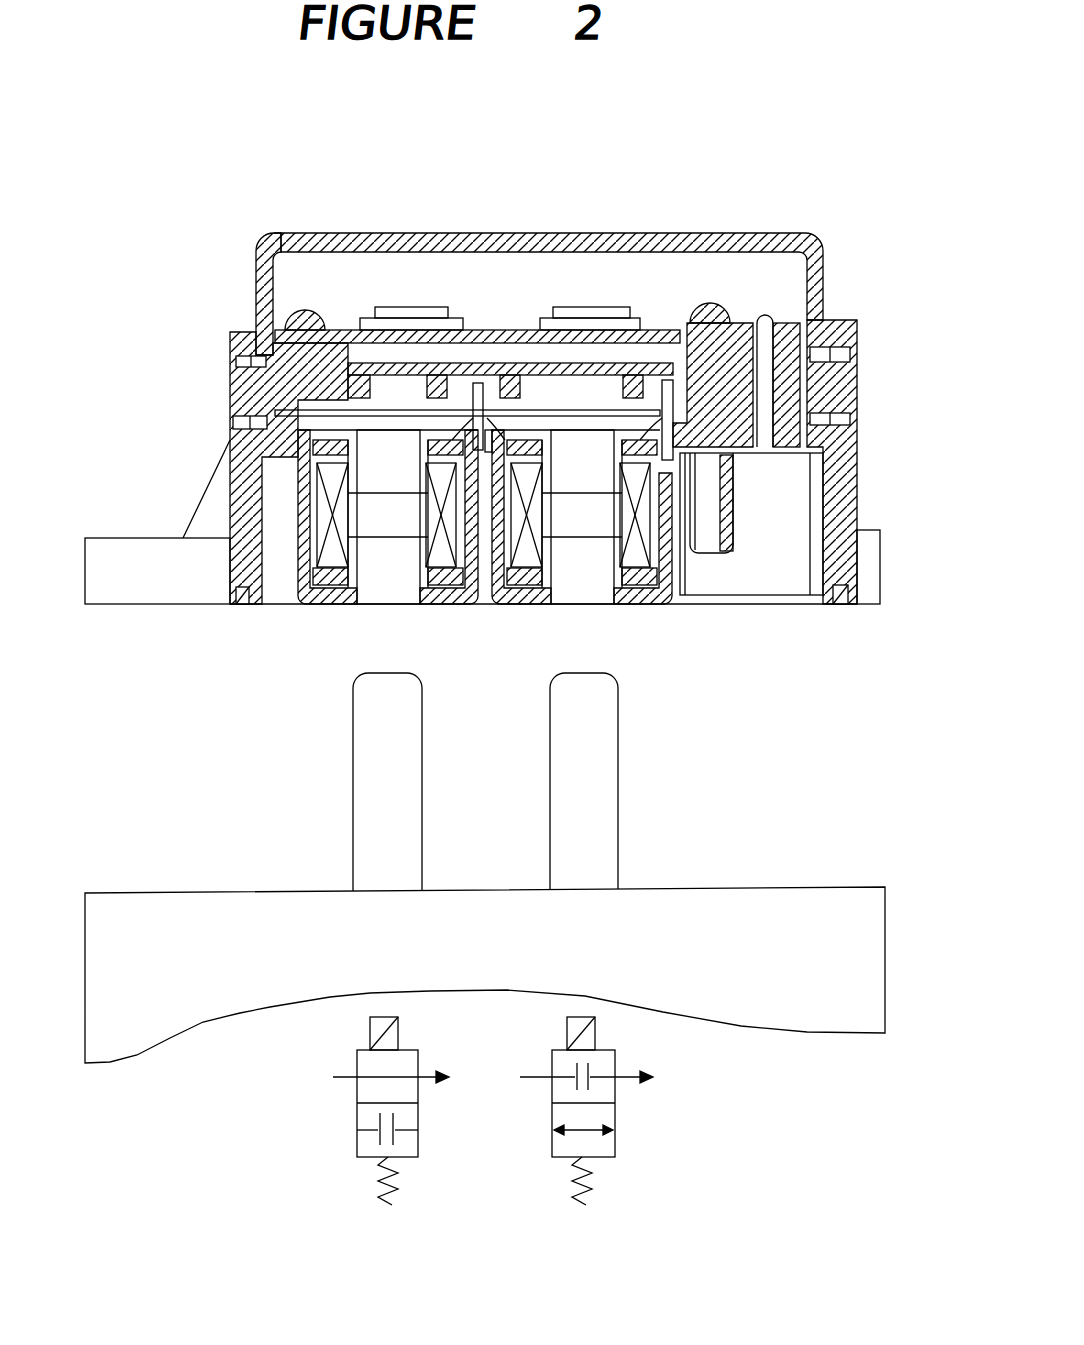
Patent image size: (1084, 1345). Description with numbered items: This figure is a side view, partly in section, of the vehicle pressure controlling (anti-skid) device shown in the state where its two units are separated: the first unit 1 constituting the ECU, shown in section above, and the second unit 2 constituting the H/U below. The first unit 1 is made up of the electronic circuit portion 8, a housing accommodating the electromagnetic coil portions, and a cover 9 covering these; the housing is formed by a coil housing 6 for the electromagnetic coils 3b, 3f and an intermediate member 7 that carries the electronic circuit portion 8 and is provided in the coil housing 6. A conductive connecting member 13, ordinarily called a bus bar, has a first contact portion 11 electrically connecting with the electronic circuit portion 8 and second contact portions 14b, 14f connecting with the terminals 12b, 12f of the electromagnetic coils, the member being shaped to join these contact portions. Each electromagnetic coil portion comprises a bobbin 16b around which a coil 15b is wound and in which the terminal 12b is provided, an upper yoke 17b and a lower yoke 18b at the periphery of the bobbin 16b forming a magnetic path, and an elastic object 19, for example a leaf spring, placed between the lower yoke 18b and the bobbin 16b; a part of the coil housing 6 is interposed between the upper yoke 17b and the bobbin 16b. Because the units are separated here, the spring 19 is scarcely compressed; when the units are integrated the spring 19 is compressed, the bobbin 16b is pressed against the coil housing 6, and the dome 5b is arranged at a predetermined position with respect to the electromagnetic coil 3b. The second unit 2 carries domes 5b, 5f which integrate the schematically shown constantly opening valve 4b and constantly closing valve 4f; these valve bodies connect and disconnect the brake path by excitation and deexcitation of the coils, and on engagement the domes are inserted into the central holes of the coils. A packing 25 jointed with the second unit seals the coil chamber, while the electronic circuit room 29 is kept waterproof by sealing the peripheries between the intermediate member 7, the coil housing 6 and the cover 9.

The first unit 1 is at (135, 538).
The second unit 2 is at (748, 887).
The electromagnetic coil 3b is at (327, 590).
The electromagnetic coil 3f is at (530, 605).
The constantly opening valve 4b is at (405, 1157).
The constantly closing valve 4f is at (602, 1157).
The dome 5b is at (383, 802).
The dome 5f is at (573, 802).
The coil housing 6 is at (855, 500).
The intermediate member 7 is at (235, 392).
The electronic circuit portion 8 is at (550, 330).
The cover 9 is at (737, 240).
The first contact portion 11 is at (783, 318).
The terminal 12b is at (453, 433).
The terminal 12f is at (650, 433).
The conductive connecting member 13 is at (757, 450).
The second contact portion 14b is at (480, 385).
The second contact portion 14f is at (672, 385).
The coil 15b is at (298, 565).
The bobbin 16b is at (340, 598).
The upper yoke 17b is at (330, 435).
The lower yoke 18b is at (430, 600).
The elastic object 19 is at (485, 605).
The packing 25 is at (840, 597).
The electronic circuit room 29 is at (295, 270).